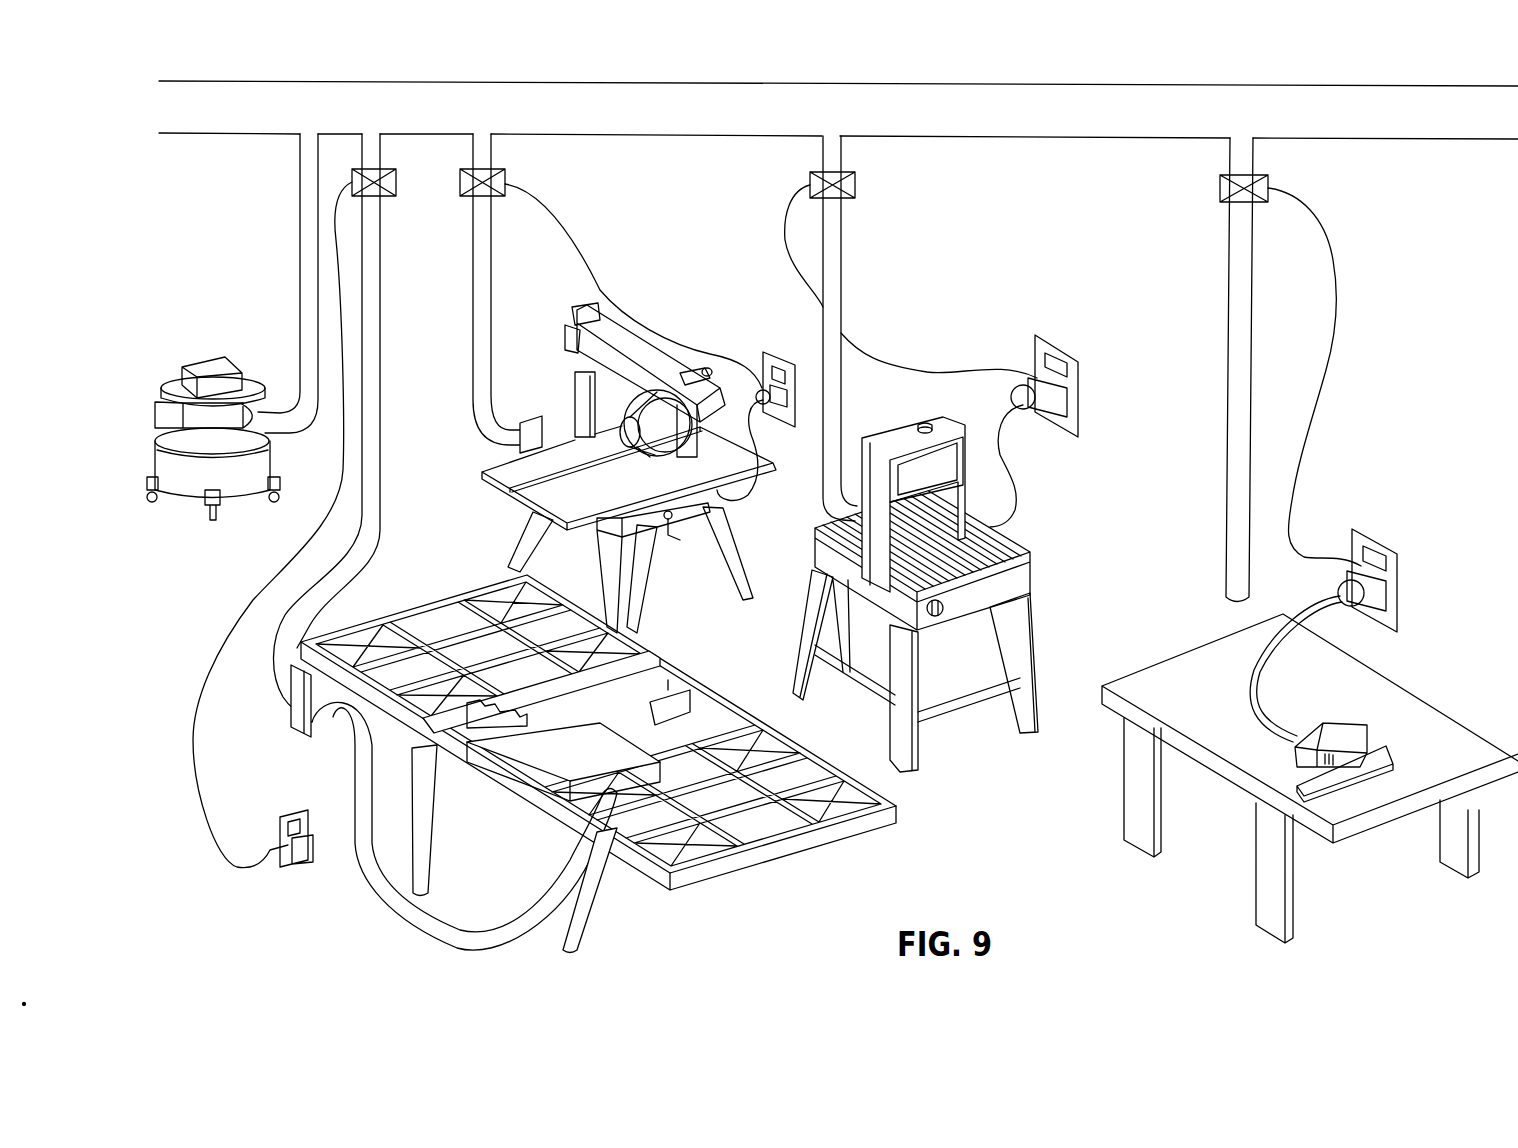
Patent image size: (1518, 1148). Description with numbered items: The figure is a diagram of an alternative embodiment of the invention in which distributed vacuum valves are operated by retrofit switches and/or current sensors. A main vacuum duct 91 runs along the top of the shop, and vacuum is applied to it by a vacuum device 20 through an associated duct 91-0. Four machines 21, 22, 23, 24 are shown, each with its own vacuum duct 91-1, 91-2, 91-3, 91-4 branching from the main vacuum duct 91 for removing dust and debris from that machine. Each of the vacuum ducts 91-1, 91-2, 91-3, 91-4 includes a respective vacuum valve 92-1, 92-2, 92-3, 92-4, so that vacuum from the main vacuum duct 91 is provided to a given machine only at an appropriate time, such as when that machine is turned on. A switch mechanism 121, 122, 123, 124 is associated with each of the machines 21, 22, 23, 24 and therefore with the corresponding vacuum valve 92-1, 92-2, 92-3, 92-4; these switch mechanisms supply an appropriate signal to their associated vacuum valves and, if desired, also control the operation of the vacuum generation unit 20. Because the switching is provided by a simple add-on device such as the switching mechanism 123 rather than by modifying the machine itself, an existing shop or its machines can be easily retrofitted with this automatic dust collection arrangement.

The main vacuum duct 91 is at (547, 90).
The associated duct 91-0 is at (305, 241).
The vacuum duct 91-1 is at (380, 319).
The vacuum duct 91-2 is at (474, 253).
The vacuum duct 91-3 is at (841, 268).
The vacuum duct 91-4 is at (1229, 289).
The vacuum valve 92-1 is at (393, 182).
The vacuum valve 92-2 is at (508, 182).
The vacuum valve 92-3 is at (855, 179).
The vacuum valve 92-4 is at (1223, 183).
The vacuum device 20 is at (237, 488).
The machine 21 is at (608, 499).
The machine 22 is at (1020, 541).
The machine 23 is at (723, 710).
The machine 24 is at (1393, 771).
The switch mechanism 121 is at (785, 412).
The switch mechanism 122 is at (1067, 402).
The switch mechanism 123 is at (297, 863).
The switch mechanism 124 is at (1386, 596).